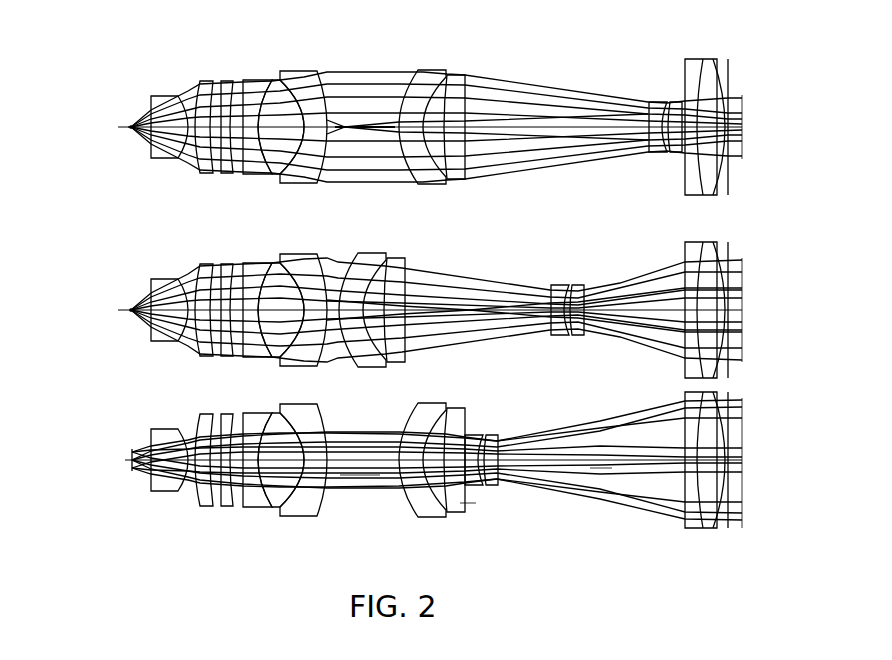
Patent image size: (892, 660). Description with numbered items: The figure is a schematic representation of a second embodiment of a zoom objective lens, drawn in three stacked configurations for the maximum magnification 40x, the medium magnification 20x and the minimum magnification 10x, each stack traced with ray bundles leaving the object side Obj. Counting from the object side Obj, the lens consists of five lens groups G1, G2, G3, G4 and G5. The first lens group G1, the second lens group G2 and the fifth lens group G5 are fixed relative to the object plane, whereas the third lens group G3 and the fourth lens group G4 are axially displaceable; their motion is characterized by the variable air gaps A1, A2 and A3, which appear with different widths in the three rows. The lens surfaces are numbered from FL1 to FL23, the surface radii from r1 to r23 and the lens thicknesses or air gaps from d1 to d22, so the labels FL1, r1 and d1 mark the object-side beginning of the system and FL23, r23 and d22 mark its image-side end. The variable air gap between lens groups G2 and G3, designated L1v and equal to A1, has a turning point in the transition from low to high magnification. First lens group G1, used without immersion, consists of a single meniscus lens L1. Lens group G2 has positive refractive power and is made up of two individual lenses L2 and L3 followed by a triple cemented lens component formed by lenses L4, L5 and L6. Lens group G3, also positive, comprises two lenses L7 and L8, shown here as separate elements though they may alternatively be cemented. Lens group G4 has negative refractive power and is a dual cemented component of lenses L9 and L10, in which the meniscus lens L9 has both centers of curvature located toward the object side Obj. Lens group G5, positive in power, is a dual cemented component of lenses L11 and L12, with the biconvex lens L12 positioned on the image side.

The object side Obj is at (85, 113).
The first lens surface FL1 is at (128, 127).
The meniscus lens L1 is at (160, 96).
The individual lens L2 is at (205, 92).
The individual lens L3 is at (227, 92).
The lens of triple cemented component L4 is at (255, 90).
The lens of triple cemented component L5 is at (277, 92).
The lens of triple cemented component L6 is at (310, 82).
The lens of third lens group L7 is at (429, 72).
The lens of third lens group L8 is at (465, 80).
The meniscus lens L9 is at (655, 102).
The lens of fourth lens group L10 is at (668, 100).
The lens of fifth lens group L11 is at (699, 68).
The biconvex lens L12 is at (713, 67).
The last lens surface FL23 is at (740, 133).
The variable air gap L1v is at (363, 132).
The first lens group G1 is at (178, 164).
The second lens group G2 is at (318, 183).
The third lens group G3 is at (467, 188).
The fourth lens group G4 is at (680, 160).
The fifth lens group G5 is at (722, 202).
The maximum magnification position 40x is at (512, 176).
The medium magnification position 20x is at (512, 345).
The minimum magnification position 10x is at (512, 503).
The first radius r1 is at (130, 310).
The last radius r23 is at (735, 307).
The first thickness d1 is at (140, 476).
The last thickness or air gap d22 is at (712, 462).
The variable air gap A1 is at (360, 476).
The variable air gap A2 is at (468, 504).
The variable air gap A3 is at (600, 469).